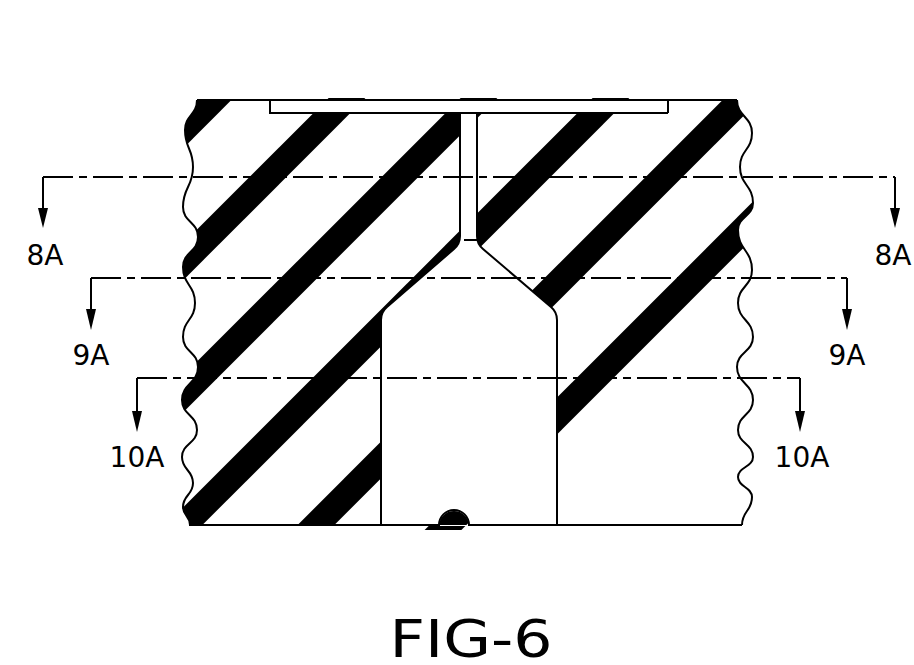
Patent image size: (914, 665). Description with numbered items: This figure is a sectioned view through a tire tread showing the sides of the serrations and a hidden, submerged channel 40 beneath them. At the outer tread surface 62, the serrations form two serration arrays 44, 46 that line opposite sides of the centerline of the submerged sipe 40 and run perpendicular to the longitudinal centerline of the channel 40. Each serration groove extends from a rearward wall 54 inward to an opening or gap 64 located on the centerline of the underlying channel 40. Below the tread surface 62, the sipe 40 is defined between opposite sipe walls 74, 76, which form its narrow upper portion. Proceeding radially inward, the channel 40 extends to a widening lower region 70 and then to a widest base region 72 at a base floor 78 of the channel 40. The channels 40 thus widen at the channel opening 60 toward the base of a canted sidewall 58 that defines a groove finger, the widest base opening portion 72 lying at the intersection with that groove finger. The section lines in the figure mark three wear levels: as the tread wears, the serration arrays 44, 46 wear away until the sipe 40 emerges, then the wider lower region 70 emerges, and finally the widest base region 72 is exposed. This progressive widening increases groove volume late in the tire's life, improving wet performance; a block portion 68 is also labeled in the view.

The submerged sipe or channel 40 is at (484, 243).
The serration array 44 is at (579, 101).
The serration array 46 is at (311, 102).
The rearward wall 54 is at (667, 102).
The canted sidewall 58 is at (663, 503).
The channel opening 60 is at (503, 443).
The outer tread surface 62 is at (700, 101).
The opening or gap 64 is at (466, 110).
The left block portion 68 is at (253, 100).
The widening lower region 70 is at (495, 293).
The widest base region 72 is at (422, 472).
The sipe wall 74 is at (468, 208).
The sipe wall 76 is at (482, 160).
The base floor 78 is at (469, 525).